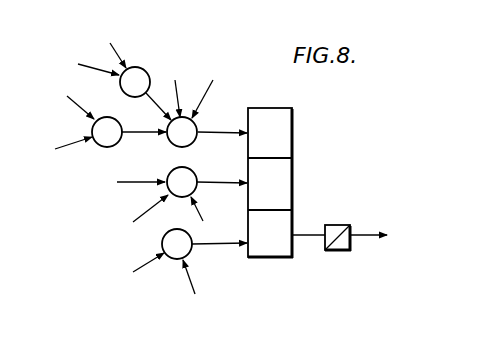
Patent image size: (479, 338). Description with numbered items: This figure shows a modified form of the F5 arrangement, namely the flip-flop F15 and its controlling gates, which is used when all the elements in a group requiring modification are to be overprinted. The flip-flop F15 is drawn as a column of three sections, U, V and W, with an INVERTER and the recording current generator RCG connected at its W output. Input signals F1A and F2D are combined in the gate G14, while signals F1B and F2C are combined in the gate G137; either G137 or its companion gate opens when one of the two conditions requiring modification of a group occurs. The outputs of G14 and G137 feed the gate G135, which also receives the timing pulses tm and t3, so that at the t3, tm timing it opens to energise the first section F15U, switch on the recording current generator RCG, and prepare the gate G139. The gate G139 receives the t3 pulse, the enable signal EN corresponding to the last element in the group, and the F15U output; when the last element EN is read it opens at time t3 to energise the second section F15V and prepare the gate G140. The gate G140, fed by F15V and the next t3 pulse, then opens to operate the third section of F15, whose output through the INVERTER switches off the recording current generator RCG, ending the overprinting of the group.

The AND gate (2-input) G14 is at (143, 68).
The gate G137 is at (126, 139).
The gate G135 is at (200, 139).
The gate G139 is at (200, 186).
The gate G140 is at (198, 249).
The flip-flop F15 is at (270, 175).
The inverter INVERTER is at (330, 230).
The recording current generator RCG is at (385, 238).
The signal F1A is at (113, 48).
The signal F2D is at (81, 66).
The signal F1B is at (65, 101).
The signal F2C is at (58, 148).
The timing pulse tm is at (177, 90).
The timing pulse t3 is at (158, 187).
The last element in the group EN is at (139, 213).
The section U of F15 F15U is at (206, 214).
The section V of F15 F15V is at (134, 270).